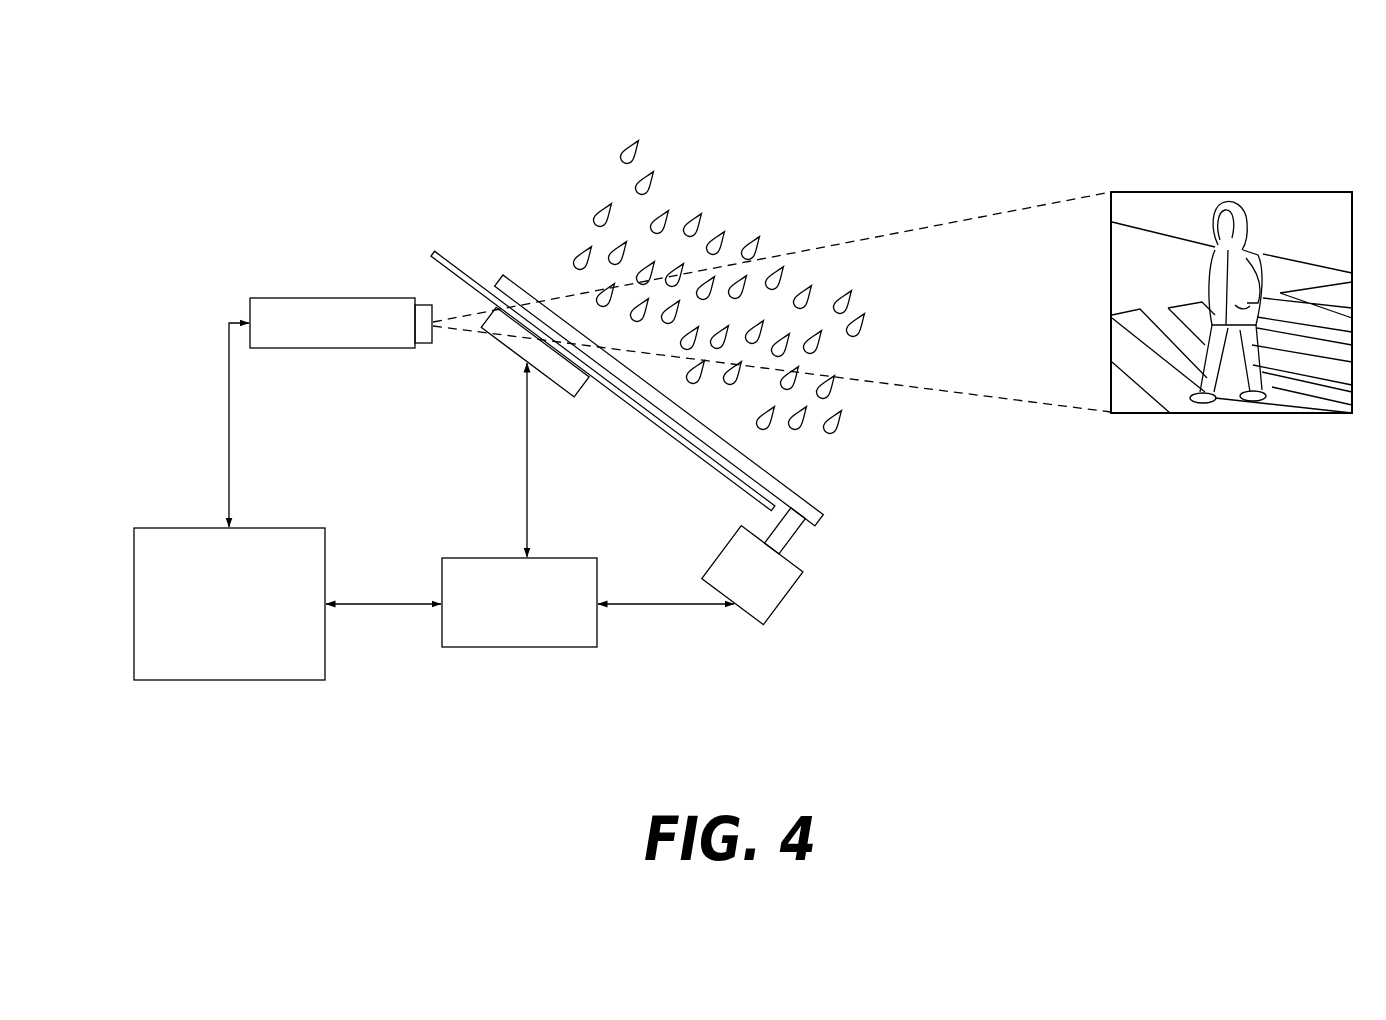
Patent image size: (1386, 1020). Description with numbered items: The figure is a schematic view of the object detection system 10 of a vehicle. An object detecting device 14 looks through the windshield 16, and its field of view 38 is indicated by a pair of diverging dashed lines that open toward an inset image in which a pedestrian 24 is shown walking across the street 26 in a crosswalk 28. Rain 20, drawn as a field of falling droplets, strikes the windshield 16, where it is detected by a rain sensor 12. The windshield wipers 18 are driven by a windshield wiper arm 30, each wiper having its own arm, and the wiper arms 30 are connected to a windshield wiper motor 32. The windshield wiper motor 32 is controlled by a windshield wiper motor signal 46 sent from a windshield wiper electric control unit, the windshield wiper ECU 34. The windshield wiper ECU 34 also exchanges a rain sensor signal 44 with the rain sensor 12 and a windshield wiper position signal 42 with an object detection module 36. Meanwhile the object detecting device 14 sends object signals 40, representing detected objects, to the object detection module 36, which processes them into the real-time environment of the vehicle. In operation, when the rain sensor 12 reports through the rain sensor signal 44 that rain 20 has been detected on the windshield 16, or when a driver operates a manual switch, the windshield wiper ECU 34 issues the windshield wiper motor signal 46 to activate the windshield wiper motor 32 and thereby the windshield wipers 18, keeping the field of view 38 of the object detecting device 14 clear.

The object detection system 10 is at (243, 117).
The rain sensor 12 is at (574, 400).
The object detecting device 14 is at (275, 293).
The windshield 16 is at (431, 249).
The windshield wipers 18 is at (820, 494).
The rain 20 is at (735, 219).
The pedestrian 24 is at (1256, 371).
The street 26 is at (1138, 214).
The crosswalk 28 is at (1316, 285).
The windshield wiper arm 30 is at (796, 545).
The windshield wiper motor 32 is at (795, 598).
The windshield wiper electric control unit (ECU) 34 is at (596, 649).
The object detection module 36 is at (172, 526).
The field of view 38 is at (1008, 404).
The object signals 40 is at (225, 390).
The windshield wiper position signal 42 is at (385, 609).
The rain sensor signal 44 is at (522, 488).
The windshield wiper motor signal 46 is at (677, 608).